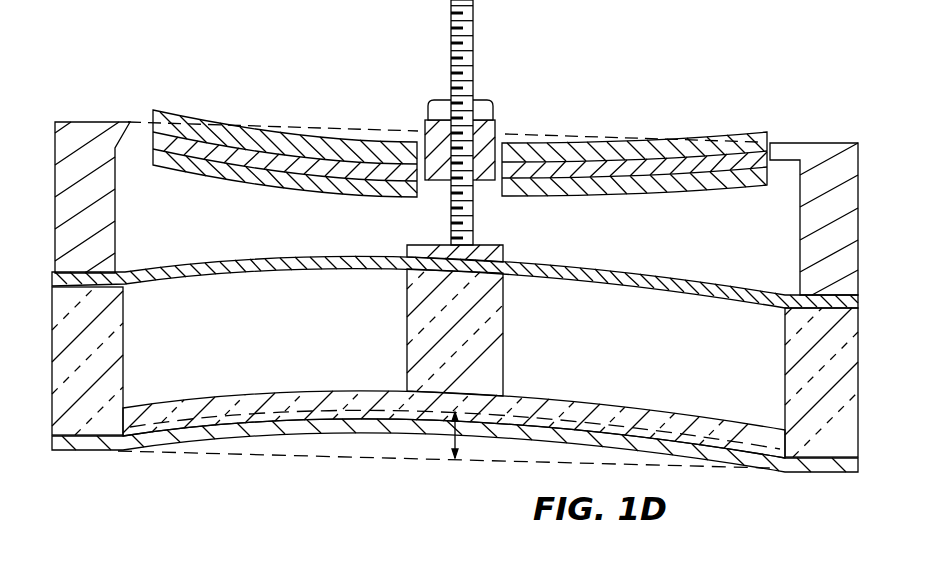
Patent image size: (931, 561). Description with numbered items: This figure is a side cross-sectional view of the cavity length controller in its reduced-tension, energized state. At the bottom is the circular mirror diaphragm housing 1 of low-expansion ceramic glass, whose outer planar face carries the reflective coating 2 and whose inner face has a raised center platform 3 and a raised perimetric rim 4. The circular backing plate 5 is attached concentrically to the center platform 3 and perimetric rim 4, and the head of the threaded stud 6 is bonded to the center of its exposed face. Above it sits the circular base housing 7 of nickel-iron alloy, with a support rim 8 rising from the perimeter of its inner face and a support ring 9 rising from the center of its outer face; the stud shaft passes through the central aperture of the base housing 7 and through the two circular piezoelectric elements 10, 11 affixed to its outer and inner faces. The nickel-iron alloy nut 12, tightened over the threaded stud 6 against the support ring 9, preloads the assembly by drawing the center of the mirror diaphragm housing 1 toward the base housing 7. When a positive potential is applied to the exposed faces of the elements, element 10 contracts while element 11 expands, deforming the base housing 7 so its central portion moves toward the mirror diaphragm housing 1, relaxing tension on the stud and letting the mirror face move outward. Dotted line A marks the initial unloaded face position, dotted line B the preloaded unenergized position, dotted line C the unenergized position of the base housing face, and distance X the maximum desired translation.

The circular mirror diaphragm housing 1 is at (863, 312).
The reflective coating 2 is at (95, 452).
The raised center platform 3 is at (503, 362).
The raised perimetric rim 4 is at (123, 378).
The circular backing plate 5 is at (724, 286).
The threaded stud 6 is at (476, 34).
The circular base housing 7 is at (863, 145).
The support rim 8 is at (115, 228).
The support ring 9 is at (495, 130).
The piezoelectric element 10 is at (597, 143).
The piezoelectric element 11 is at (255, 185).
The nickel-iron alloy nut 12 is at (493, 108).
The dotted line A is at (279, 458).
The dotted line B is at (344, 415).
The dotted line C is at (398, 128).
The distance X is at (462, 448).